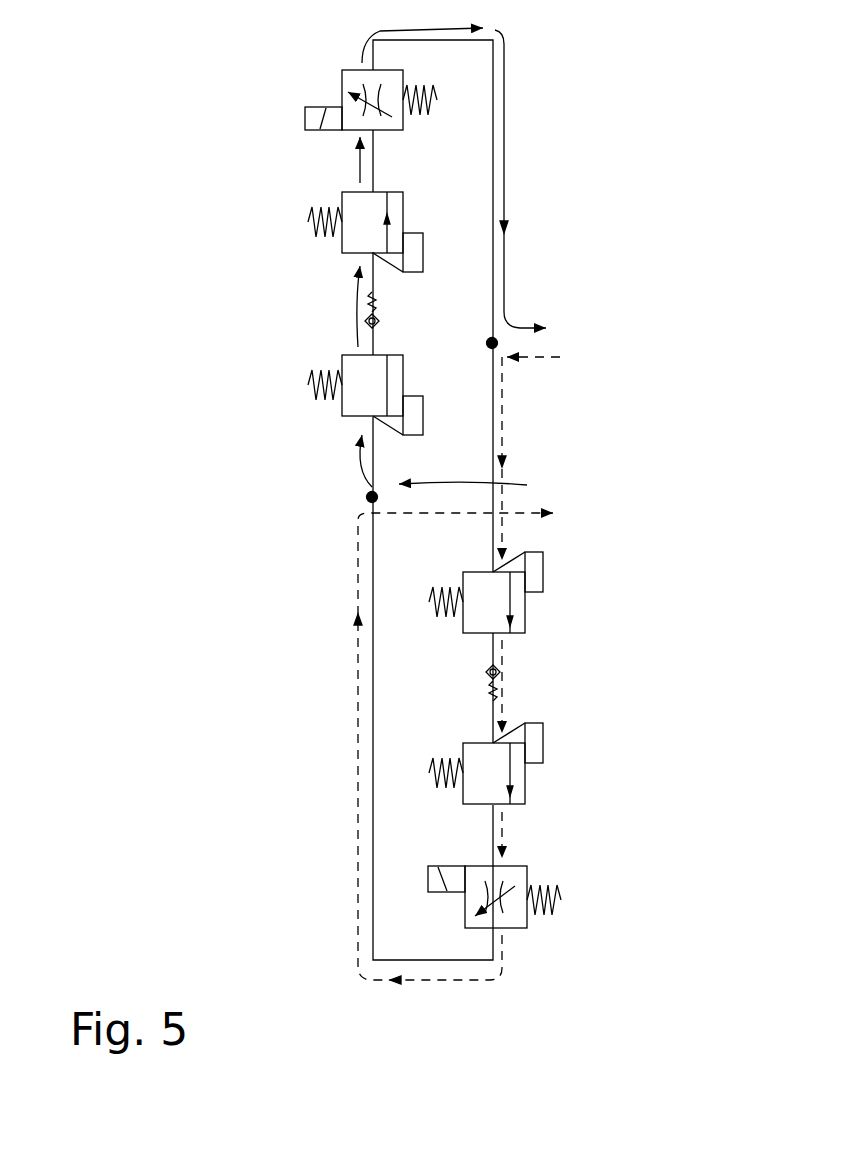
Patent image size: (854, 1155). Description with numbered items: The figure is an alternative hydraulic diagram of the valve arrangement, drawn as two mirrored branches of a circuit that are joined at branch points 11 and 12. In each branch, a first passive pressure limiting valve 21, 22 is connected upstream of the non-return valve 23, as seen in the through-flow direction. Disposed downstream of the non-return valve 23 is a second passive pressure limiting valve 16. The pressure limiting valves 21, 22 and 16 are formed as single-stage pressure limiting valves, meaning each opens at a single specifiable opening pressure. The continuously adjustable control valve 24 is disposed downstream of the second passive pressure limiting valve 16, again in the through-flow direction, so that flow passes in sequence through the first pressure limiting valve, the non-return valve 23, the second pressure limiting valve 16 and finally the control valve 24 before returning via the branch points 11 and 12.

The junction point 11 is at (380, 497).
The junction point 12 is at (492, 343).
The second passive pressure limiting valve 16 is at (352, 197).
The first passive pressure limiting valve 21 is at (357, 405).
The first passive pressure limiting valve 22 is at (515, 609).
The non-return valve 23 is at (362, 313).
The continuously adjustable control valve 24 is at (357, 73).